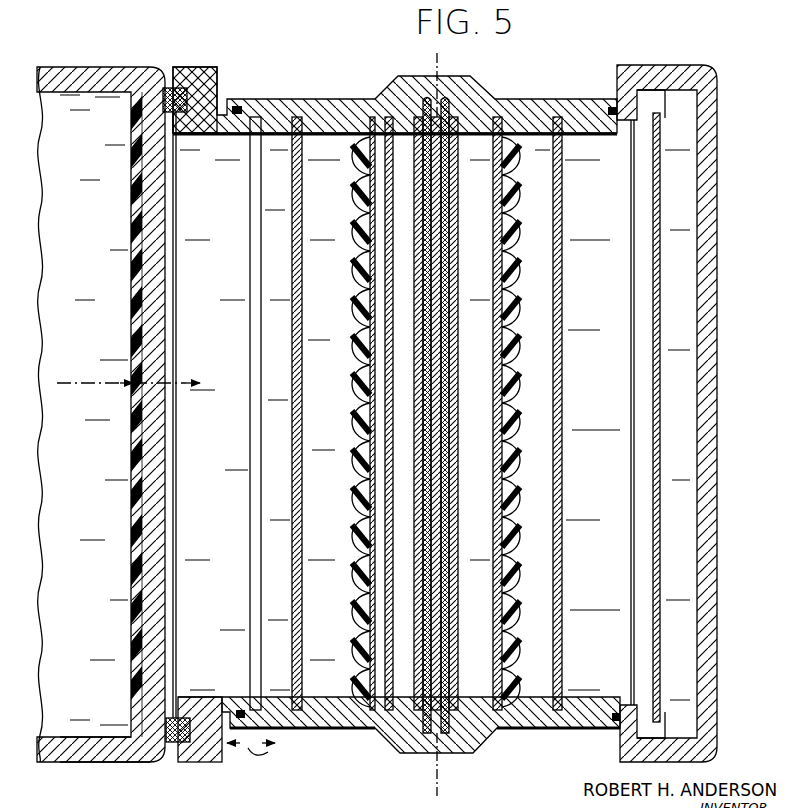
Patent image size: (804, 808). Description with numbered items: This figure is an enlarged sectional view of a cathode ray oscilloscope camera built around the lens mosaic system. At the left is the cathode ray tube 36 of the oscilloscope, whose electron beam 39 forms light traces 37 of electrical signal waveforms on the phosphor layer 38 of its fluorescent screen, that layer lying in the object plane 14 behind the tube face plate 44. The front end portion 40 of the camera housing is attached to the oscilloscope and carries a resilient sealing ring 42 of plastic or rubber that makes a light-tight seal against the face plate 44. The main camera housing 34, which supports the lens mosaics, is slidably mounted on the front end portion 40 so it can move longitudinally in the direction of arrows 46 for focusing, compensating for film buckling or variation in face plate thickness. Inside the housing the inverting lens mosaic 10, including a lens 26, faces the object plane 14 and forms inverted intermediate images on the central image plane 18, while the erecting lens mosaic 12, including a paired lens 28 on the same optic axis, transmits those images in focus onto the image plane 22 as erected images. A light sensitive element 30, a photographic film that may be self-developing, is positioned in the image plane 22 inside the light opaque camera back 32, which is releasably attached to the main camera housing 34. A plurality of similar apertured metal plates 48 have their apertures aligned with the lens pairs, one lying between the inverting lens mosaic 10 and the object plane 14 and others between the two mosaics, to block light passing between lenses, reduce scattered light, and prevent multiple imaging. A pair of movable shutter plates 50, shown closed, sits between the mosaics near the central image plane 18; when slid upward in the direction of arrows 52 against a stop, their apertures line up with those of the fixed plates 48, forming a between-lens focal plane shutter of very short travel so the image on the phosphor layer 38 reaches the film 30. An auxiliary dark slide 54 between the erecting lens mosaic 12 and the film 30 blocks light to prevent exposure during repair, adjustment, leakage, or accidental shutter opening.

The inverting lens mosaic 10 is at (354, 190).
The erecting lens mosaic 12 is at (518, 218).
The object plane 14 is at (130, 196).
The central image plane 18 is at (437, 62).
The image plane 22 is at (663, 521).
The lens 26 is at (351, 301).
The lens 28 is at (517, 318).
The light sensitive element 30 is at (660, 380).
The camera back 32 is at (718, 494).
The main camera housing 34 is at (582, 730).
The cathode ray tube 36 is at (100, 763).
The light traces 37 is at (196, 382).
The phosphor layer 38 is at (132, 601).
The electron beam 39 is at (108, 385).
The front end portion 40 is at (206, 62).
The resilient sealing ring 42 is at (173, 743).
The face plate 44 is at (158, 248).
The arrows 46 is at (266, 753).
The apertured metal plates 48 is at (294, 354).
The movable shutter plates 50 is at (448, 380).
The arrows 52 is at (397, 93).
The auxiliary dark slide 54 is at (562, 215).